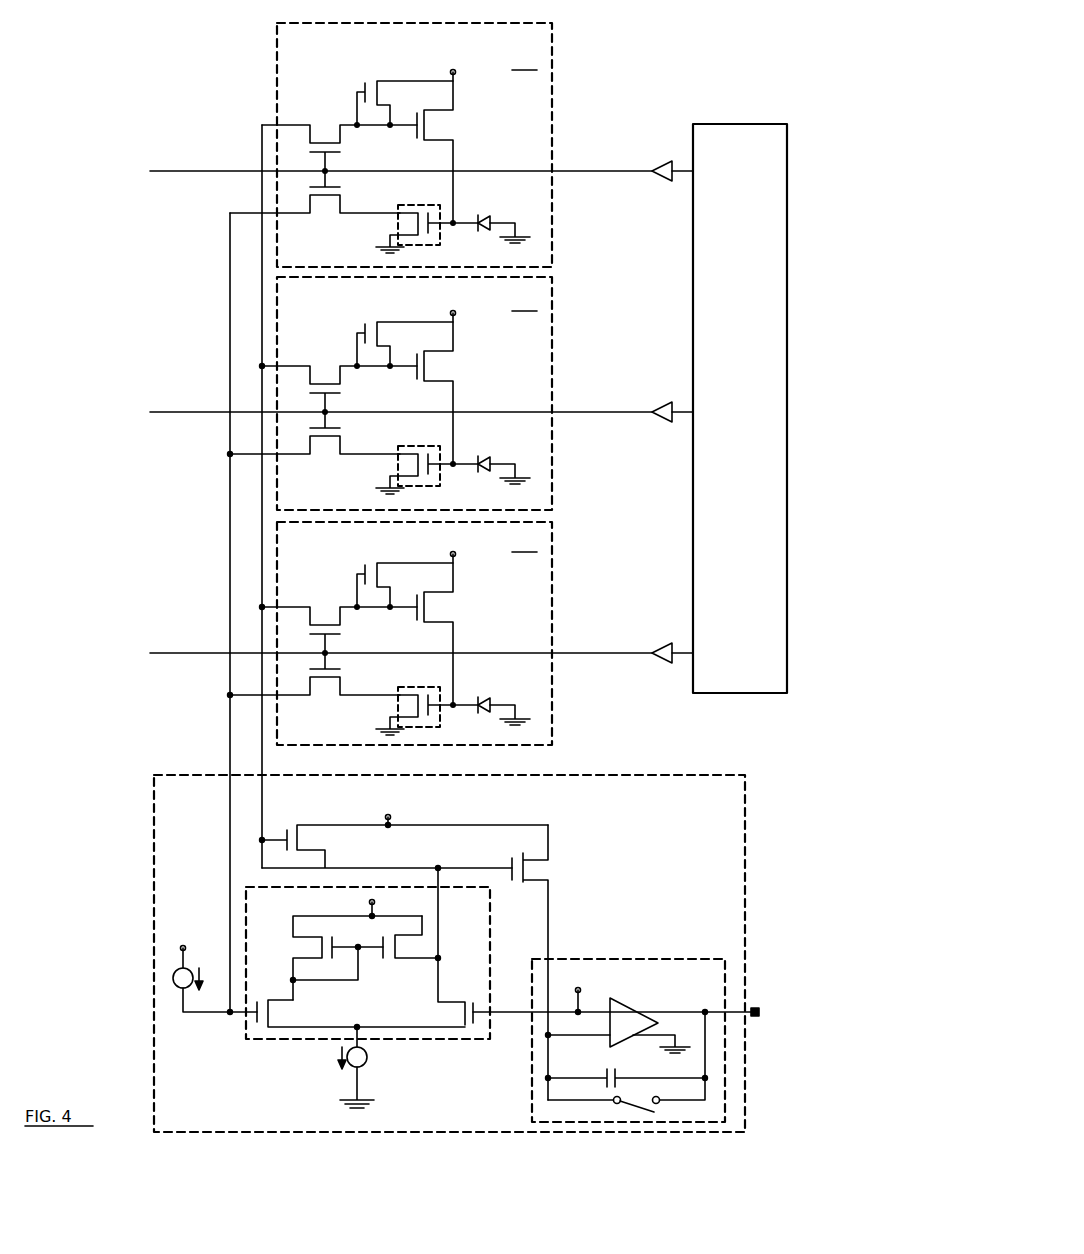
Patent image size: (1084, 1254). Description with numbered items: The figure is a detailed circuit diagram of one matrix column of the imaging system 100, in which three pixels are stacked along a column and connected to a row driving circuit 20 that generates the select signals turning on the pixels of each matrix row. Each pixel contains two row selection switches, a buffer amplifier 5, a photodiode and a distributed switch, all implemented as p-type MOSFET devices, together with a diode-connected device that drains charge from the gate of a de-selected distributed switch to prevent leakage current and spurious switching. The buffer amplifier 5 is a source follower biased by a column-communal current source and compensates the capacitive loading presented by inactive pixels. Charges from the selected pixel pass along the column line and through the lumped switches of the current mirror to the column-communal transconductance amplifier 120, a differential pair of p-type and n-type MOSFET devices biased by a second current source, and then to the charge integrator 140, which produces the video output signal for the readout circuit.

The imaging system 100 is at (825, 76).
The row driving circuit 20 is at (732, 303).
The transconductance amplifier 120 is at (481, 926).
The charge integrator 140 is at (675, 994).
The buffer amplifier 5 is at (410, 200).